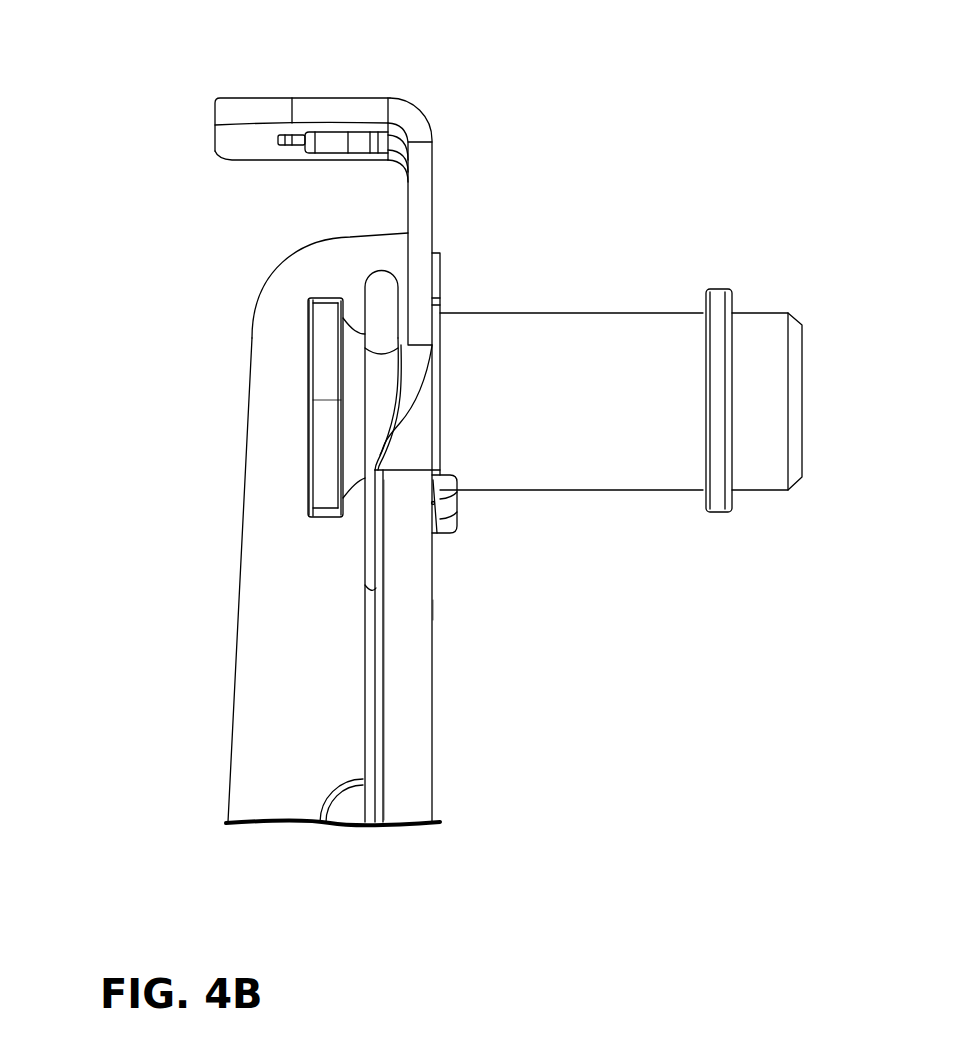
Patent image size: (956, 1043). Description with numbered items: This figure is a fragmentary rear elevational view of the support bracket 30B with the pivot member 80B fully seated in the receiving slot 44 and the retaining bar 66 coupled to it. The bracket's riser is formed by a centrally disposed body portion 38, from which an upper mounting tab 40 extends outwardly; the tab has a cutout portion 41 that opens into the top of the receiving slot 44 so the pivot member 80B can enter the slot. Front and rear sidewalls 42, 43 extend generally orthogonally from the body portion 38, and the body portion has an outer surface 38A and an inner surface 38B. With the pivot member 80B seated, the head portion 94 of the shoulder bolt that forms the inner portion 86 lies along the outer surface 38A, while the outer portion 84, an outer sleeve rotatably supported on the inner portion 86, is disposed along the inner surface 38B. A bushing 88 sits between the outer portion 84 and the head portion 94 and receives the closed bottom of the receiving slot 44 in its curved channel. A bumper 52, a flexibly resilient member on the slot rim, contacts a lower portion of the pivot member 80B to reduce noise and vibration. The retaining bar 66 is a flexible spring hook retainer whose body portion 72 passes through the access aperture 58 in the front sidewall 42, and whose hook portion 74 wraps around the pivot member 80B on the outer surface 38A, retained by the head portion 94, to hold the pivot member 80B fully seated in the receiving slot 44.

The upper mounting tab 40 is at (259, 90).
The cutout portion 41 is at (332, 143).
The receiving slot 44 is at (442, 191).
The front sidewall 42 is at (257, 622).
The head portion 94 is at (326, 306).
The inner portion 86 is at (303, 345).
The bushing 88 is at (355, 404).
The hook portion 74 is at (383, 287).
The retaining bar 66 is at (356, 548).
The body portion 72 is at (373, 702).
The access aperture 58 is at (332, 788).
The body portion 38 is at (439, 692).
The rear sidewall 43 is at (400, 743).
The outer surface 38A is at (329, 624).
The inner surface 38B is at (437, 607).
The support bracket 30B is at (512, 645).
The bumper 52 is at (446, 517).
The outer portion 84 is at (511, 355).
The pivot member 80B is at (611, 259).